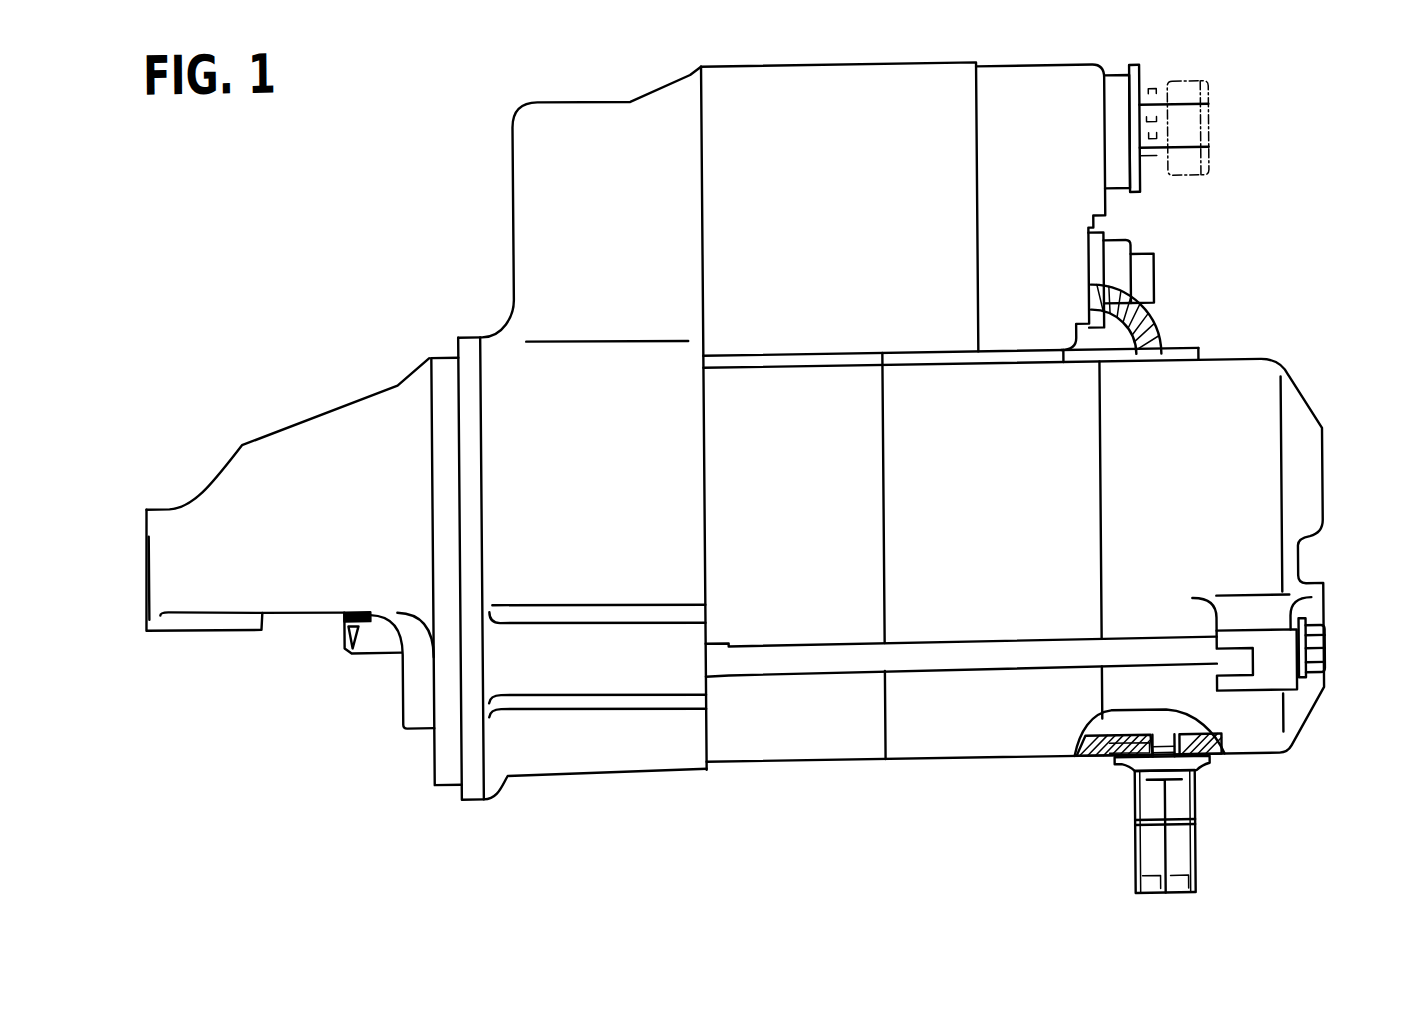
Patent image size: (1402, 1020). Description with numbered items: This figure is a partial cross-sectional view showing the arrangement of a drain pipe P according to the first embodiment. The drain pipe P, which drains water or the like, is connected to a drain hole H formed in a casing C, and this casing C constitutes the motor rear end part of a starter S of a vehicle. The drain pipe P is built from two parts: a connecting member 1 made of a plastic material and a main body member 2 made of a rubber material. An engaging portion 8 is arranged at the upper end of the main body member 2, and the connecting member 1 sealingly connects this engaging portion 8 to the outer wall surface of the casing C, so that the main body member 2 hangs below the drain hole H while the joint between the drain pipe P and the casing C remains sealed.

The connecting member 1 is at (1188, 722).
The main body member 2 is at (1195, 853).
The engaging portion 8 is at (1207, 764).
The drain hole H is at (1167, 739).
The drain pipe P is at (1205, 823).
The casing C is at (1298, 739).
The starter S is at (366, 176).